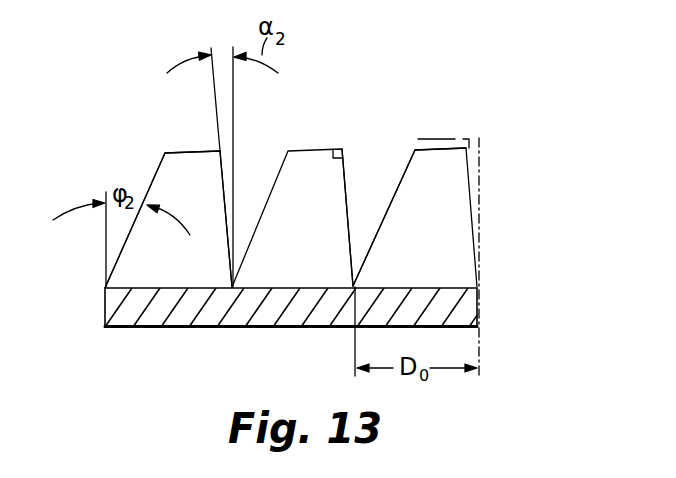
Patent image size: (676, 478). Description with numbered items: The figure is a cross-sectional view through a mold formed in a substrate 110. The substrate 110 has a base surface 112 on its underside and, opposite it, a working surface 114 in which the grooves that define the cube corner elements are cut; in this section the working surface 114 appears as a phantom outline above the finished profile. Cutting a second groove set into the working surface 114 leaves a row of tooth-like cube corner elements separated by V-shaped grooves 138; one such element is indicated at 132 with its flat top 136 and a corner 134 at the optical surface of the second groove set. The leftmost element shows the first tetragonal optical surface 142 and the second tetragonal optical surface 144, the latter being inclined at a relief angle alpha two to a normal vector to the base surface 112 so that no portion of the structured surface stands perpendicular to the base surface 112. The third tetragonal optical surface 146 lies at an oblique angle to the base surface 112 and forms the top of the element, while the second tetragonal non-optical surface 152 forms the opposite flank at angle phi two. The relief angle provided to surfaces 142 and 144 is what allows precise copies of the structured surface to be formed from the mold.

The substrate 110 is at (470, 303).
The base surface 112 is at (295, 328).
The working surface 114 is at (458, 145).
The tooth 132 is at (375, 165).
The optical surface of second groove set 134 is at (352, 165).
The tooth top surface 136 is at (405, 158).
The groove 138 is at (357, 268).
The first tetragonal optical surface 142 is at (208, 196).
The second tetragonal optical surface 144 is at (224, 172).
The third tetragonal optical surface 146 is at (197, 149).
The second tetragonal non-optical surface 152 is at (157, 167).